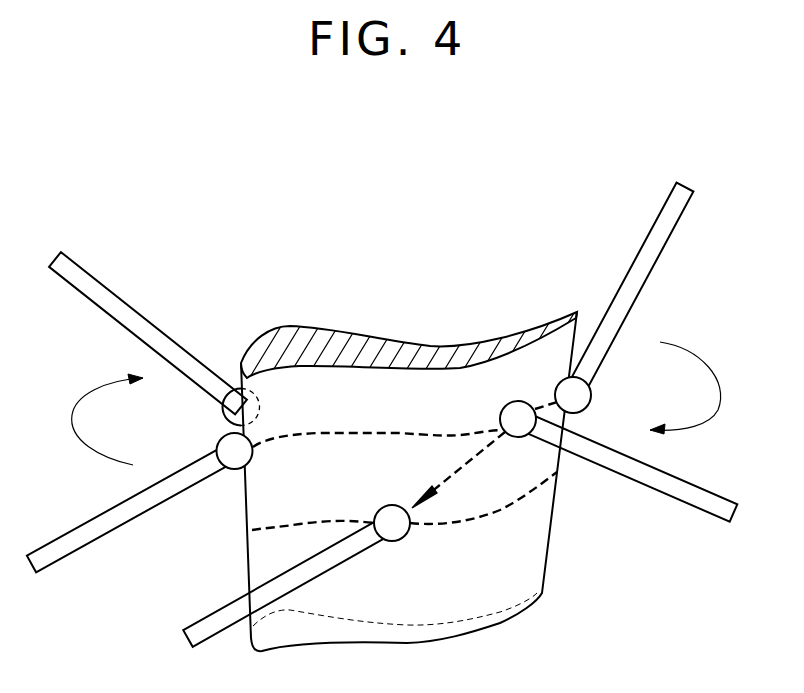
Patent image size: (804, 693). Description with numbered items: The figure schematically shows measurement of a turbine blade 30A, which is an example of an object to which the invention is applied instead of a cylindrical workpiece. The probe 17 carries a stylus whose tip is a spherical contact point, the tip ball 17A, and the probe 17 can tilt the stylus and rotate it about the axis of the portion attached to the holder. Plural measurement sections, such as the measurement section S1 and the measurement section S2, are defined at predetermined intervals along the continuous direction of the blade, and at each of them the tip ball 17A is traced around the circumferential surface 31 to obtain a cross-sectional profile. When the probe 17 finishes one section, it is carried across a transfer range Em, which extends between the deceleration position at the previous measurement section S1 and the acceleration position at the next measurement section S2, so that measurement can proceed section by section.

The probe 17 is at (675, 230).
The tip ball 17A is at (517, 401).
The turbine blade 30A is at (336, 338).
The circumferential surface 31 is at (380, 388).
The measurement section S1 is at (447, 432).
The measurement section S2 is at (510, 505).
The transfer range Em is at (463, 470).